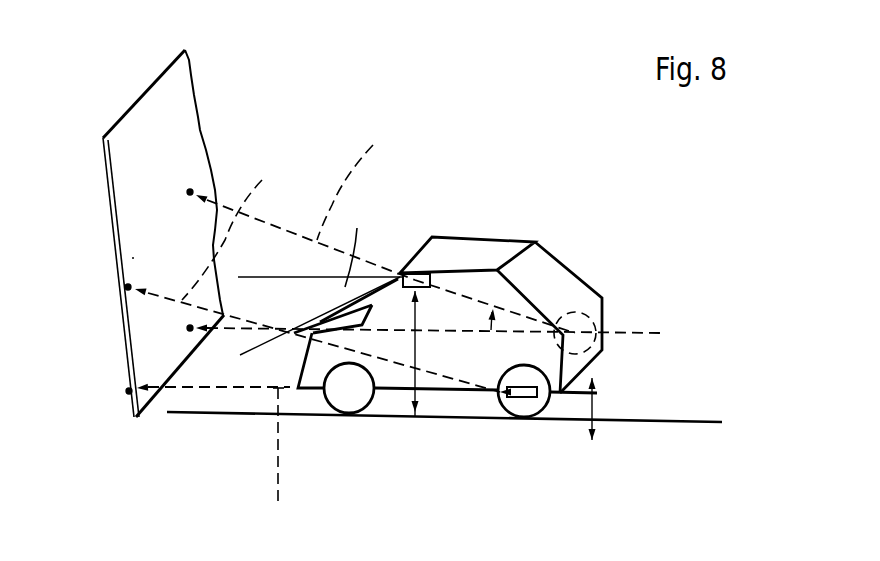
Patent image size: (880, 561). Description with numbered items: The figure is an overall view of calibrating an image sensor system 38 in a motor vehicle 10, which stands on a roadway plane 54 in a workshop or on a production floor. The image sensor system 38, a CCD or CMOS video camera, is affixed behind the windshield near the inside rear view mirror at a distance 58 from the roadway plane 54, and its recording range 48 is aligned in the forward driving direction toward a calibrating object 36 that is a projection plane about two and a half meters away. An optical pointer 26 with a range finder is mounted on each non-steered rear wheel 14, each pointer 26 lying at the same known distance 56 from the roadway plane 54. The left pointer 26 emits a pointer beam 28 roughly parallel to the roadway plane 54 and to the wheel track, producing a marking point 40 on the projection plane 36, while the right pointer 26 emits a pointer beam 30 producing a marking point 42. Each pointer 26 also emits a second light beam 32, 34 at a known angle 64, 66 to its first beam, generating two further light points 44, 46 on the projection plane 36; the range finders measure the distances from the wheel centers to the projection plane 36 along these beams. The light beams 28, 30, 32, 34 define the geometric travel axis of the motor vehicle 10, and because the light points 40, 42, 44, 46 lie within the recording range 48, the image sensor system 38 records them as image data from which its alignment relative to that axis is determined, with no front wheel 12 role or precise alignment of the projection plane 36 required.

The motor vehicle 10 is at (592, 232).
The front wheel 12 is at (350, 412).
The rear wheel 14 is at (518, 418).
The optical pointer 26 is at (535, 398).
The pointer beam 28 is at (282, 461).
The pointer beam 30 is at (385, 264).
The second light beam 32 is at (235, 229).
The second light beam 34 is at (358, 181).
The calibrating object 36 is at (140, 252).
The image sensor system 38 is at (422, 272).
The marking point 40 is at (127, 394).
The marking point 42 is at (188, 328).
The light point 44 is at (108, 276).
The light point 46 is at (178, 178).
The recording range 48 is at (360, 246).
The roadway plane 54 is at (705, 420).
The distance 56 is at (593, 403).
The distance 58 is at (417, 380).
The angle 64 is at (438, 378).
The angle 66 is at (496, 325).